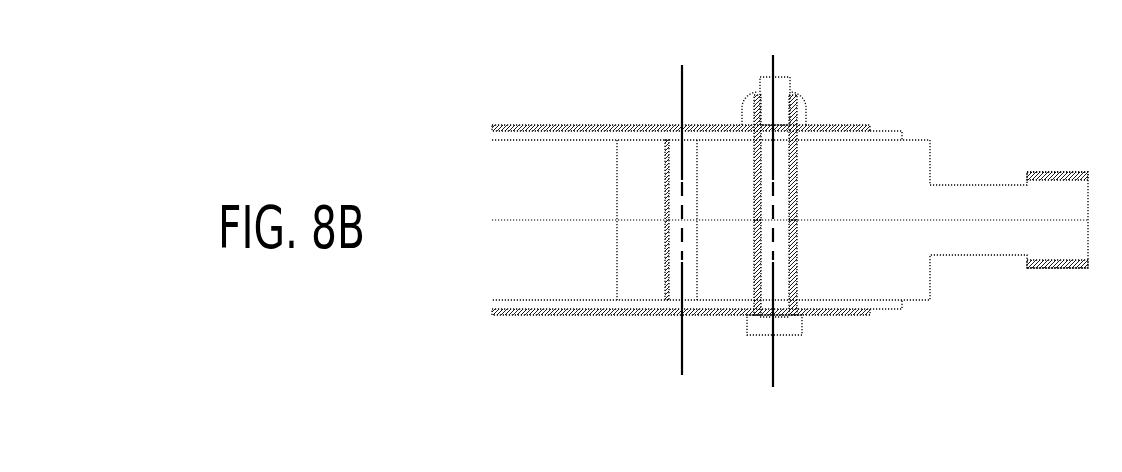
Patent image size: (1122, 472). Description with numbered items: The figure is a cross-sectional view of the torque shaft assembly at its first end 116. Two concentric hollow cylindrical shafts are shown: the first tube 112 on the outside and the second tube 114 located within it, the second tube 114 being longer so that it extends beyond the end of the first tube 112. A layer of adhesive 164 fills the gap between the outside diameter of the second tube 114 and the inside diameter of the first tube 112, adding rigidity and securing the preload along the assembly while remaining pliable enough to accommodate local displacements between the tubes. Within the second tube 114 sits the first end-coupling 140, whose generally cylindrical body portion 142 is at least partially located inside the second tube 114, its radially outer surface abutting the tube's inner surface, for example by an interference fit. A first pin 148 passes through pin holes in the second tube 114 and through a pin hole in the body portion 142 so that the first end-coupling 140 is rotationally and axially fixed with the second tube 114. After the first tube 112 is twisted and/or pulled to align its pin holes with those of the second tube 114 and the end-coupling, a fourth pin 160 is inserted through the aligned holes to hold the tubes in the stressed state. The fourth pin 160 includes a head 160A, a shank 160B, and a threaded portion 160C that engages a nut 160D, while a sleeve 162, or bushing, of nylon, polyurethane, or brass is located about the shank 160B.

The first tube 112 is at (847, 128).
The second tube 114 is at (893, 138).
The torque shaft assembly first end 116 is at (986, 97).
The first end-coupling 140 is at (911, 191).
The first end-coupling body portion 142 is at (643, 257).
The first pin 148 is at (665, 173).
The fourth pin 160 is at (780, 320).
The head 160A is at (767, 328).
The shank 160B is at (773, 252).
The threaded portion 160C is at (768, 97).
The nut 160D is at (800, 118).
The sleeve 162 is at (750, 165).
The adhesive 164 is at (508, 126).